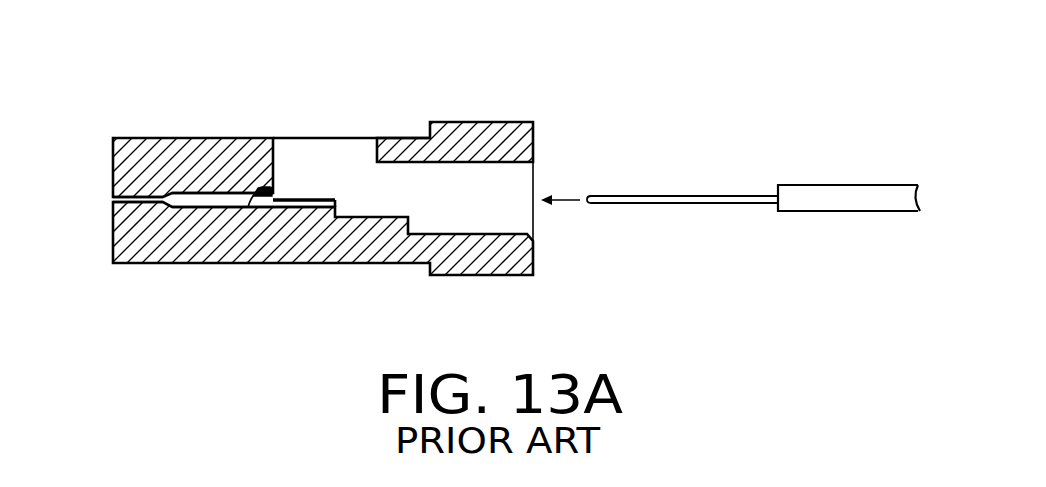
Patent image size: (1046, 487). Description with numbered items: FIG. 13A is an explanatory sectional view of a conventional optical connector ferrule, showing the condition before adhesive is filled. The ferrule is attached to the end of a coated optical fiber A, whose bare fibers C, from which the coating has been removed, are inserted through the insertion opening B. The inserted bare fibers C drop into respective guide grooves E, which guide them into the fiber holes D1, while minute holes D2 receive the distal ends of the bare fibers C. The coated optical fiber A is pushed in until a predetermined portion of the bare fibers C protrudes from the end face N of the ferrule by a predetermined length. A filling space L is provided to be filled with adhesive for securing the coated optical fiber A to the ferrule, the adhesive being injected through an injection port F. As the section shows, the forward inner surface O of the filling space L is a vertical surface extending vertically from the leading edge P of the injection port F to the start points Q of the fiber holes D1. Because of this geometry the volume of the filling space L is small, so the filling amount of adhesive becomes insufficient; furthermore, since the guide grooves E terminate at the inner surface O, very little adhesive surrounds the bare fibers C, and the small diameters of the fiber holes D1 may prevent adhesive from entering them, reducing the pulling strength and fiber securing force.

The coated optical fiber A is at (811, 172).
The insertion opening B is at (523, 217).
The bare fibers C is at (680, 196).
The fiber holes D1 is at (200, 200).
The minute holes D2 is at (143, 195).
The guide grooves E is at (292, 197).
The injection port F is at (313, 138).
The filling space L is at (353, 187).
The end face N is at (113, 165).
The forward inner surface O is at (276, 193).
The leading edge P is at (274, 185).
The start points Q is at (260, 188).